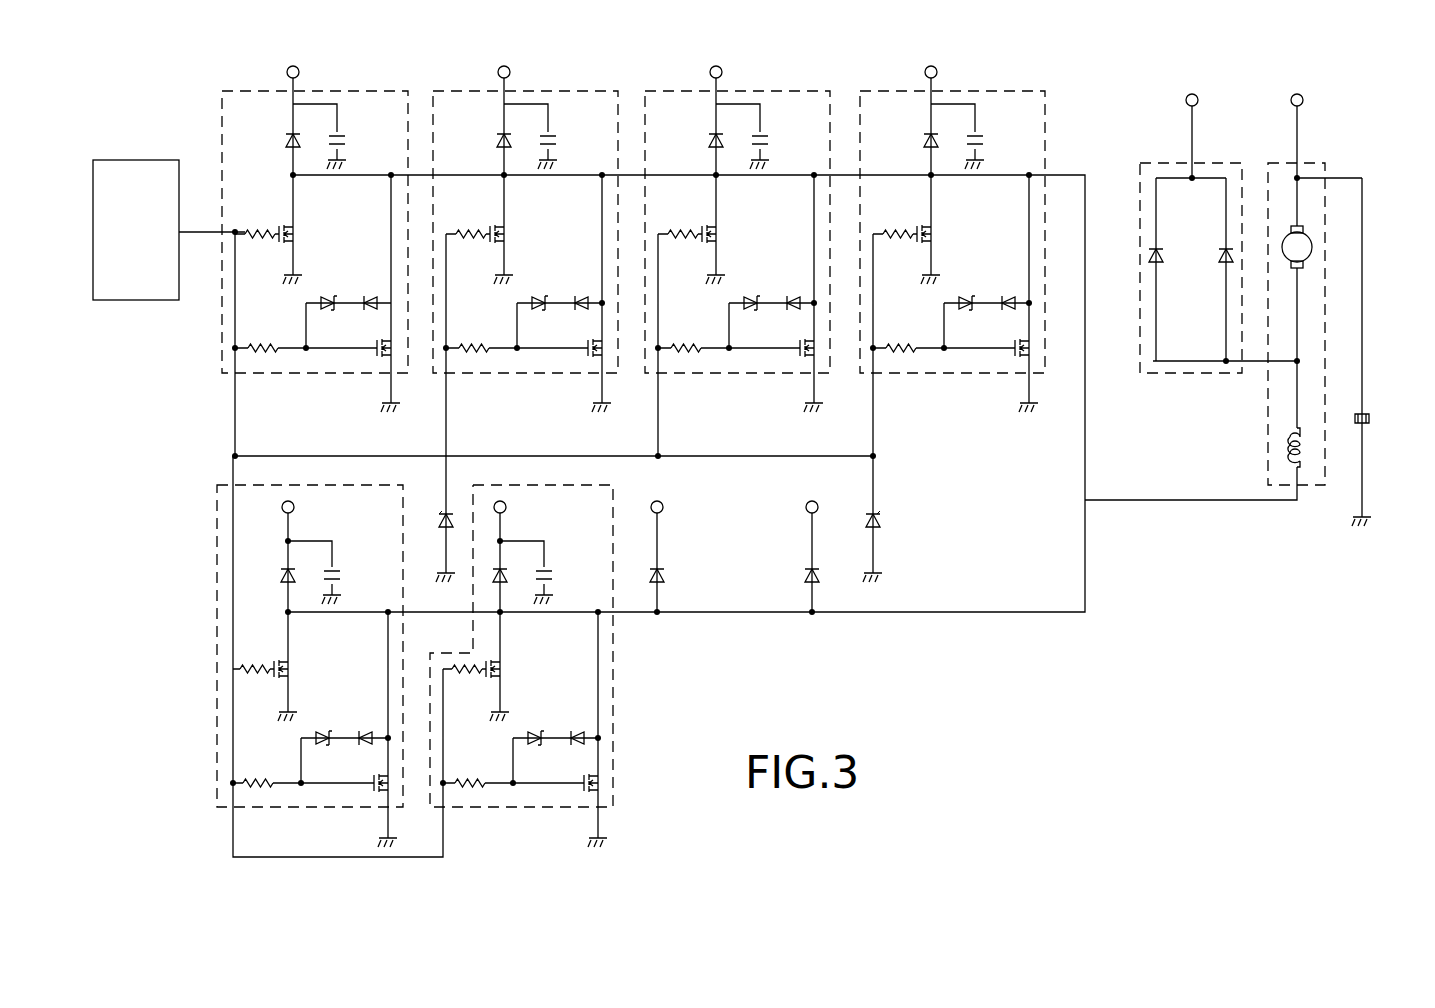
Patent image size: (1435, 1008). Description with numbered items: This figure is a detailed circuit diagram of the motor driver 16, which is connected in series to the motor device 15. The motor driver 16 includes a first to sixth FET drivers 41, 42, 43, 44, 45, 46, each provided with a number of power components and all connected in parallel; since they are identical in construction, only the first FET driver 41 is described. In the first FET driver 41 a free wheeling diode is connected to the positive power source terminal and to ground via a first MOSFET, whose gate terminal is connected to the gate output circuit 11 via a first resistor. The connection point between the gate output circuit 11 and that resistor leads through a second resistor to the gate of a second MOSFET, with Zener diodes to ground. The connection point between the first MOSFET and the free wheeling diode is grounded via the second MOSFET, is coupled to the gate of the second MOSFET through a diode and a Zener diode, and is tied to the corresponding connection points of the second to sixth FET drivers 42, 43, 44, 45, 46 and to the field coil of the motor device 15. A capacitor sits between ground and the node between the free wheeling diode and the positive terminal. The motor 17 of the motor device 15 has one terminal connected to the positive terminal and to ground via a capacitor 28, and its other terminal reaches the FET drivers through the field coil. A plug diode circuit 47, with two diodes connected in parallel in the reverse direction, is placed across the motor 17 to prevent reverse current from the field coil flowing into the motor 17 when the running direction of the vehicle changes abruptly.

The gate output circuit 11 is at (155, 160).
The motor device 15 is at (1322, 163).
The motor driver 16 is at (643, 697).
The motor 17 is at (1312, 245).
The capacitor 28 is at (1362, 416).
The first FET driver 41 is at (386, 91).
The second FET driver 42 is at (585, 91).
The third FET driver 43 is at (782, 91).
The fourth FET driver 44 is at (994, 91).
The fifth FET driver 45 is at (305, 485).
The sixth FET driver 46 is at (523, 485).
The plug diode circuit 47 is at (1230, 163).